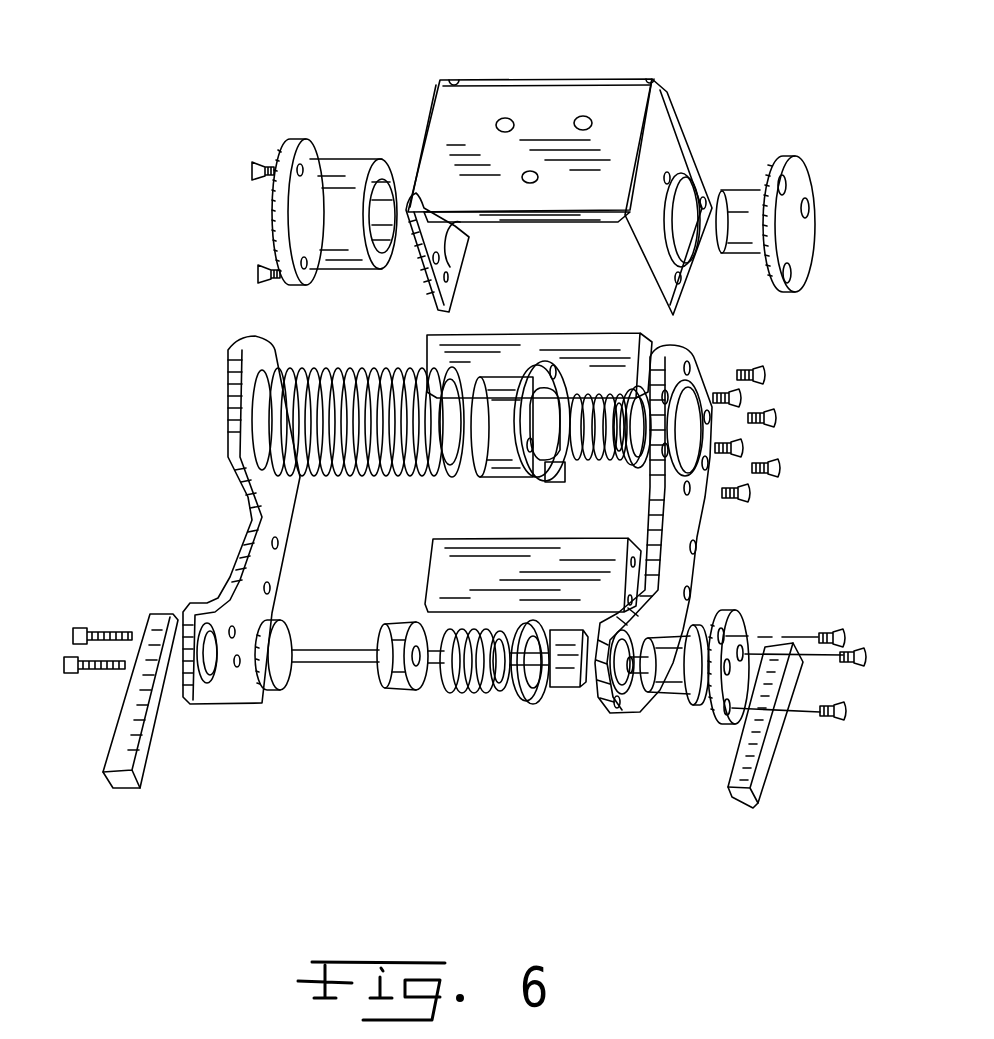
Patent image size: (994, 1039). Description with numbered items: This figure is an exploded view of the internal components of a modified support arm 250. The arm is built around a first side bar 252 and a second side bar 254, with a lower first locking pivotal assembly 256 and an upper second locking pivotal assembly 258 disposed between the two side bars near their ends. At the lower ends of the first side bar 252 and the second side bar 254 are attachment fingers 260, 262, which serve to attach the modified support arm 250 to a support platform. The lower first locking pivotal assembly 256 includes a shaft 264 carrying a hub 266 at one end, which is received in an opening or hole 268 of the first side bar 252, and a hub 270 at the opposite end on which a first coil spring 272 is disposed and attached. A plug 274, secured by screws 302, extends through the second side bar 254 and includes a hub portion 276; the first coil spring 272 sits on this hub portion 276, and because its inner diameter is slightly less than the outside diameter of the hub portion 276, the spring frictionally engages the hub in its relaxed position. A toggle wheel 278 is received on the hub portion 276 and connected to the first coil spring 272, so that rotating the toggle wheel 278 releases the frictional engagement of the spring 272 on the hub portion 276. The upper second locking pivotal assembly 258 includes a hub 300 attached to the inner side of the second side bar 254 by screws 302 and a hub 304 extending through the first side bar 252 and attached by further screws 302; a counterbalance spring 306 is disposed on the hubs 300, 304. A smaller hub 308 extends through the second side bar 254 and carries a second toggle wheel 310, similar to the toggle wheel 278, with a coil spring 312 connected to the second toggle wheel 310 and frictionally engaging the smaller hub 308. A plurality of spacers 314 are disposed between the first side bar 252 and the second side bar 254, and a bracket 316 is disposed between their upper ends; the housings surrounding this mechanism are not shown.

The modified support arm 250 is at (192, 124).
The first side bar 252 is at (230, 450).
The second side bar 254 is at (706, 538).
The lower first locking pivotal assembly 256 is at (352, 778).
The upper second locking pivotal assembly 258 is at (408, 488).
The attachment finger 260 is at (122, 792).
The attachment finger 262 is at (743, 805).
The shaft 264 is at (328, 665).
The hub 266 is at (263, 692).
The opening or hole 268 is at (210, 666).
The hub 270 is at (403, 683).
The first coil spring 272 is at (466, 694).
The plug 274 is at (722, 726).
The hub portion 276 is at (659, 692).
The toggle wheel 278 is at (540, 697).
The hub 300 is at (505, 464).
The screws 302 is at (250, 170).
The hub 304 is at (350, 165).
The counterbalance spring 306 is at (345, 370).
The smaller hub 308 is at (738, 208).
The second toggle wheel 310 is at (642, 466).
The coil spring 312 is at (585, 457).
The spacers 314 is at (558, 332).
The bracket 316 is at (542, 90).